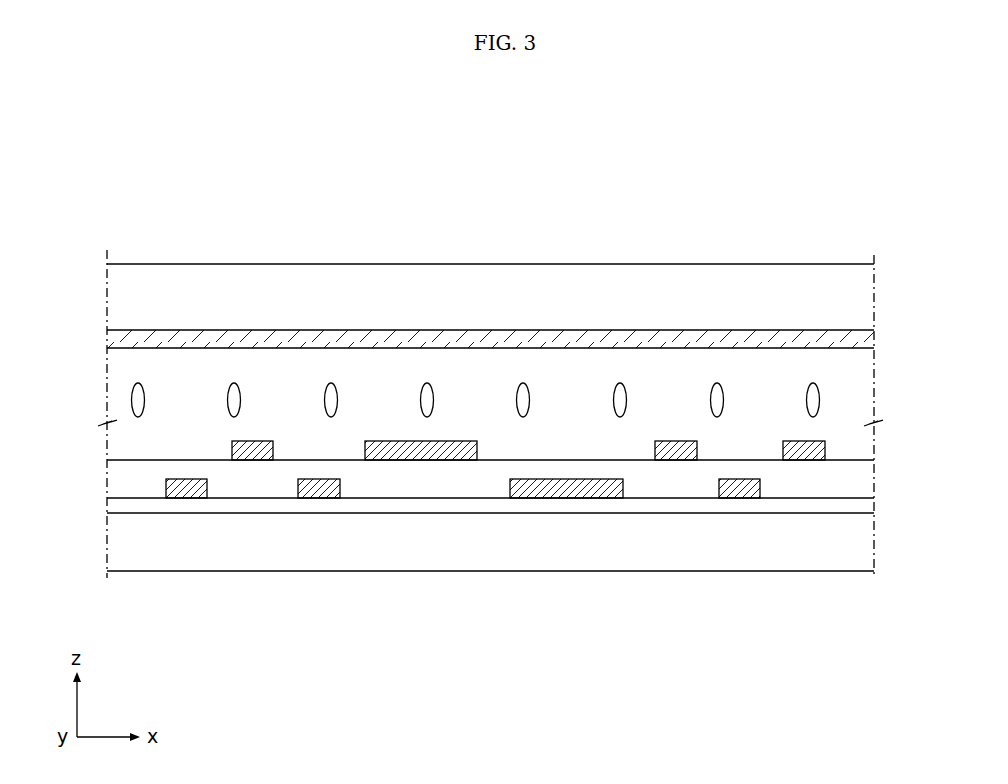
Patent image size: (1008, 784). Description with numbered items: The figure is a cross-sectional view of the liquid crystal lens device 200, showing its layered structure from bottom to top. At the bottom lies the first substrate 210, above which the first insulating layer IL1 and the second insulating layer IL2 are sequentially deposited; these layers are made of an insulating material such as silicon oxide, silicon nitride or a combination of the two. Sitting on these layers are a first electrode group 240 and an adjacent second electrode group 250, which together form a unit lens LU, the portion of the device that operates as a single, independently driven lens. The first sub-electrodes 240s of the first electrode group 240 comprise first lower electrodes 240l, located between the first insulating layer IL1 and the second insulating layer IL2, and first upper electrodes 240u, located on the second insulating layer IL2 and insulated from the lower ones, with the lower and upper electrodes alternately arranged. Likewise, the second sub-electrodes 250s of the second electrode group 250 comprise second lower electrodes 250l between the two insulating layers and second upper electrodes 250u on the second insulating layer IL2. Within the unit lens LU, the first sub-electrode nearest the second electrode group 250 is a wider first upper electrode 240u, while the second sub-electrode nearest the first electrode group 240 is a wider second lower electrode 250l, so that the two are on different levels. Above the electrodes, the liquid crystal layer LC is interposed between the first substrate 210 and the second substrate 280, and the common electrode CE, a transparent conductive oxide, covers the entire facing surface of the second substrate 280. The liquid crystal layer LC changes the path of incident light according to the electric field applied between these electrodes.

The liquid crystal lens device 200 is at (850, 203).
The second substrate 280 is at (117, 300).
The common electrode CE is at (117, 339).
The liquid crystal layer LC is at (117, 392).
The second insulating layer IL2 is at (117, 472).
The first insulating layer IL1 is at (117, 505).
The first substrate 210 is at (117, 545).
The first lower electrodes 240l is at (320, 490).
The first upper electrodes 240u is at (258, 450).
The second lower electrodes 250l is at (745, 490).
The second upper electrodes 250u is at (673, 450).
The first sub-electrodes 240s is at (395, 203).
The second sub-electrodes 250s is at (795, 203).
The first electrode group 240 is at (163, 521).
The second electrode group 250 is at (823, 521).
The unit lens LU is at (562, 639).